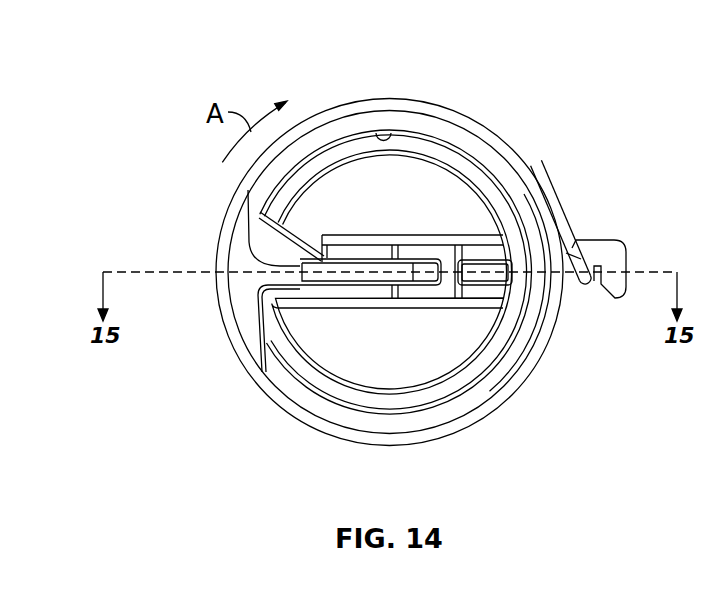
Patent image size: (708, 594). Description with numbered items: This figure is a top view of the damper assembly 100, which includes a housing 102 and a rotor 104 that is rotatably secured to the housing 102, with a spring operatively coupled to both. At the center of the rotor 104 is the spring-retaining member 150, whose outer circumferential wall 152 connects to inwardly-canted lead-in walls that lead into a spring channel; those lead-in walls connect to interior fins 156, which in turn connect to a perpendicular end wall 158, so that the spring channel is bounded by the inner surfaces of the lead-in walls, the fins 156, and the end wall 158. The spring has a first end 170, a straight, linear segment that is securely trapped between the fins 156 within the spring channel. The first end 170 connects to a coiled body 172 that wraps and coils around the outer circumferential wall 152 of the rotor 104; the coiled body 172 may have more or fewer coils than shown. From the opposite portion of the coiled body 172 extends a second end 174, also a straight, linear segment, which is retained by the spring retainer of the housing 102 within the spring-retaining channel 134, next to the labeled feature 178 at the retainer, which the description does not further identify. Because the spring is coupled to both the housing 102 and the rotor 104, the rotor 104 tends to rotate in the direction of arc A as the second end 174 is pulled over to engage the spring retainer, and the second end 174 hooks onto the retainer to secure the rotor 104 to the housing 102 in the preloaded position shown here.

The damper assembly 100 is at (216, 62).
The housing 102 is at (434, 96).
The rotor 104 is at (350, 138).
The spring-retaining channel 134 is at (598, 303).
The spring-retaining member 150 is at (493, 162).
The outer circumferential wall 152 is at (373, 130).
The interior fins 156 is at (375, 235).
The perpendicular end wall 158 is at (447, 262).
The first end 170 is at (352, 280).
The coiled body 172 is at (337, 420).
The second end 174 is at (576, 290).
The hook tab 178 is at (610, 240).